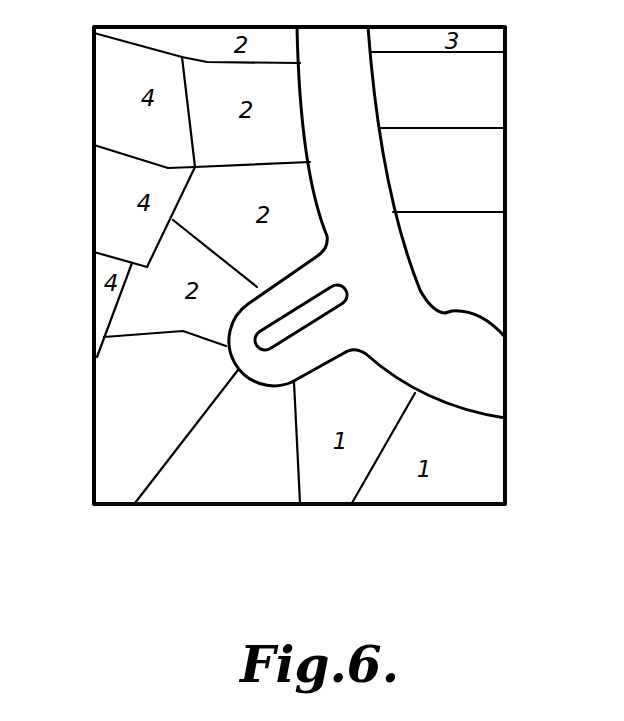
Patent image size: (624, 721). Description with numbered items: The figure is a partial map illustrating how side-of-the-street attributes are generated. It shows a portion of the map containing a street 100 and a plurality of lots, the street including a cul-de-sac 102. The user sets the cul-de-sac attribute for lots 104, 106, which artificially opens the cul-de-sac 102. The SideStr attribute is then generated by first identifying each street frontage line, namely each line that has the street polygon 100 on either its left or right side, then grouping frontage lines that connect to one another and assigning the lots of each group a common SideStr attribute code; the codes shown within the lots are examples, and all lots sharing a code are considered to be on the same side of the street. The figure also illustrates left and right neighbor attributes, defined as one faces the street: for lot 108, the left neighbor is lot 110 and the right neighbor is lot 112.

The street 100 is at (482, 370).
The cul-de-sac 102 is at (300, 359).
The lot 104 is at (110, 442).
The lot 106 is at (230, 478).
The lot 108 is at (486, 168).
The lot 110 is at (485, 258).
The lot 112 is at (485, 98).